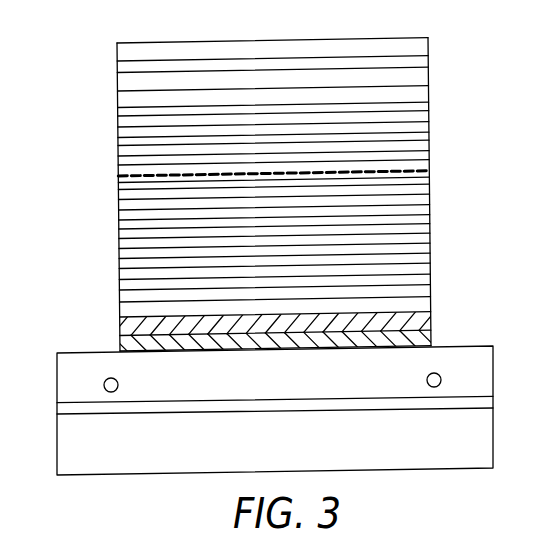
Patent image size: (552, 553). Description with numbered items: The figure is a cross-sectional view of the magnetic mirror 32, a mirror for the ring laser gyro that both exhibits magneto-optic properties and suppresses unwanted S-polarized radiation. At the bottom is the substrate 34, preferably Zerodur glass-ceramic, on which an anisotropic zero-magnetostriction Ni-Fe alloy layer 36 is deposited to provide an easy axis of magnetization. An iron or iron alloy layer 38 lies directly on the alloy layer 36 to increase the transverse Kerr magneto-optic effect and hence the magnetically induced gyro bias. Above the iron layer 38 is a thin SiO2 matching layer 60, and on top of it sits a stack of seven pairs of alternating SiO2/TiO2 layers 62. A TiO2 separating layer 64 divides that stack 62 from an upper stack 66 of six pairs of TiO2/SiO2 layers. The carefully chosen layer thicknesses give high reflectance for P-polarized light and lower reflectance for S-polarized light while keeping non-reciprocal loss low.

The magnetic mirror 32 is at (98, 485).
The substrate 34 is at (240, 452).
The anisotropic magnetic alloy layer 36 is at (433, 338).
The iron or iron alloy layer 38 is at (432, 320).
The matching layer 60 is at (119, 313).
The alternating SiO2/TiO2 layers 62 is at (107, 296).
The separating layer 64 is at (118, 177).
The stack 66 is at (105, 174).